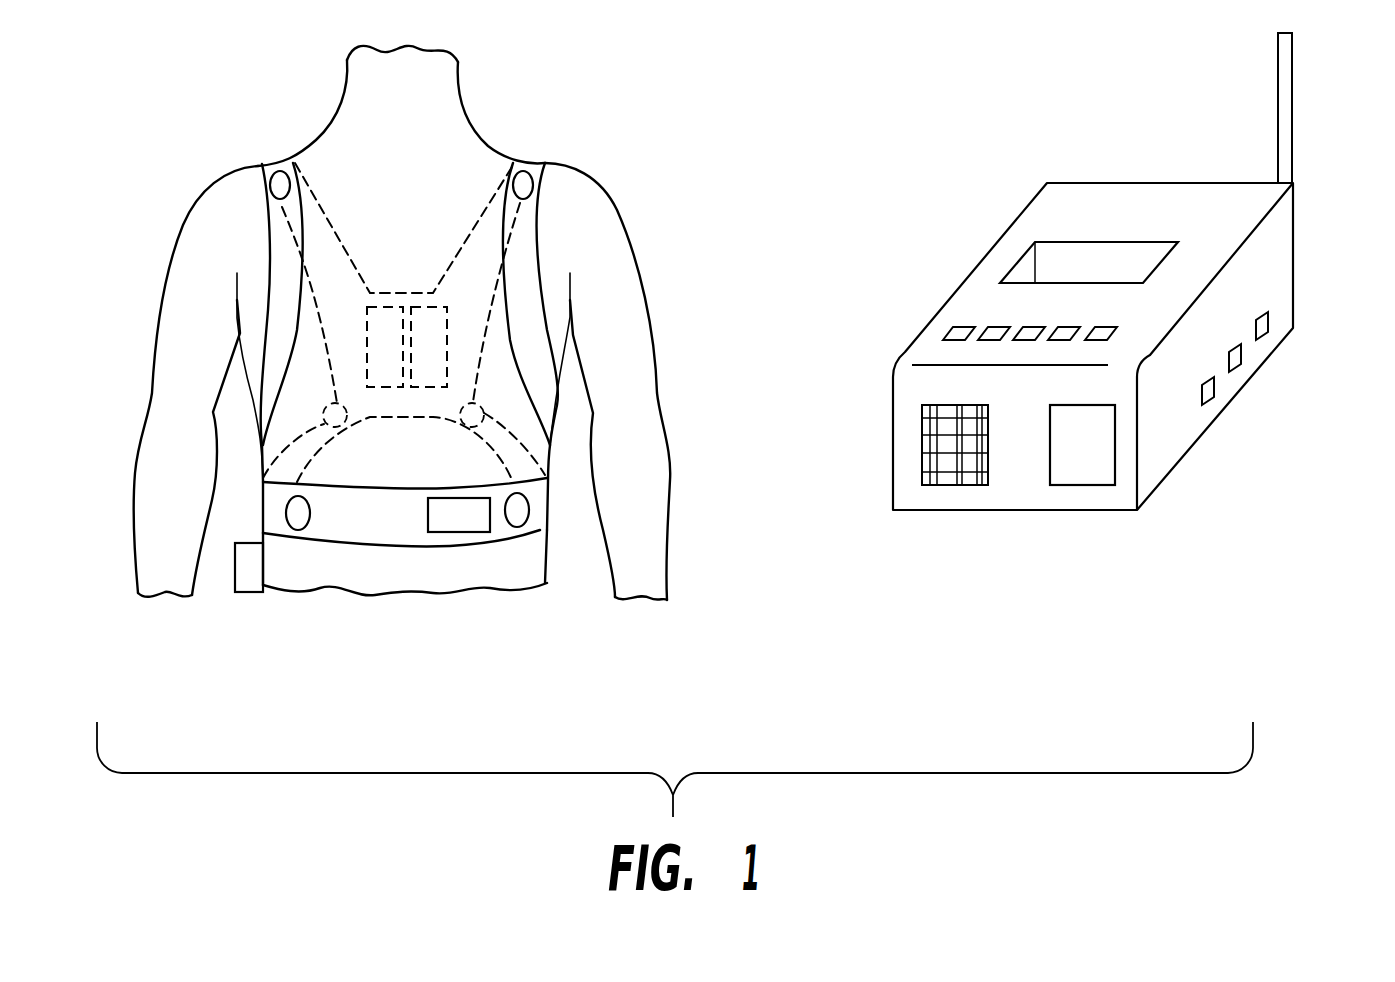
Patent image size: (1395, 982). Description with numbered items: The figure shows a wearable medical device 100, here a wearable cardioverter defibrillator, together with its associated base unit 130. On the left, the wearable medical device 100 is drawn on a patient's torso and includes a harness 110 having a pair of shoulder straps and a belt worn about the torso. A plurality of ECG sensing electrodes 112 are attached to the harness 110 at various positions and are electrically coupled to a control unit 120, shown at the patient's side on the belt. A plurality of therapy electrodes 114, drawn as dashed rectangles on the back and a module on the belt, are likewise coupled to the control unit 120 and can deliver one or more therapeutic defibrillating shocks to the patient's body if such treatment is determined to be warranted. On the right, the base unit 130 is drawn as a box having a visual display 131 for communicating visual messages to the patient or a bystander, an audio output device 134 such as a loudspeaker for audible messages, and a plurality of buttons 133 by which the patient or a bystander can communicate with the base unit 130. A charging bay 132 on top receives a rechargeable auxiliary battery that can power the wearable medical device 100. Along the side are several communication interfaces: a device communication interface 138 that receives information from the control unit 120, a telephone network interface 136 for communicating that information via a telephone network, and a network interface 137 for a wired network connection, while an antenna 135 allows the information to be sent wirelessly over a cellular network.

The wearable medical device 100 is at (648, 110).
The harness 110 is at (538, 254).
The ECG sensing electrodes 112 is at (276, 170).
The therapy electrodes 114 is at (367, 317).
The control unit 120 is at (235, 593).
The base unit 130 is at (1082, 120).
The visual display 131 is at (1090, 487).
The charging bay 132 is at (1022, 258).
The buttons 133 is at (942, 333).
The audio output device 134 is at (957, 487).
The antenna 135 is at (1280, 74).
The telephone network interface 136 is at (1268, 332).
The network interface 137 is at (1242, 363).
The device communication interface 138 is at (1213, 400).